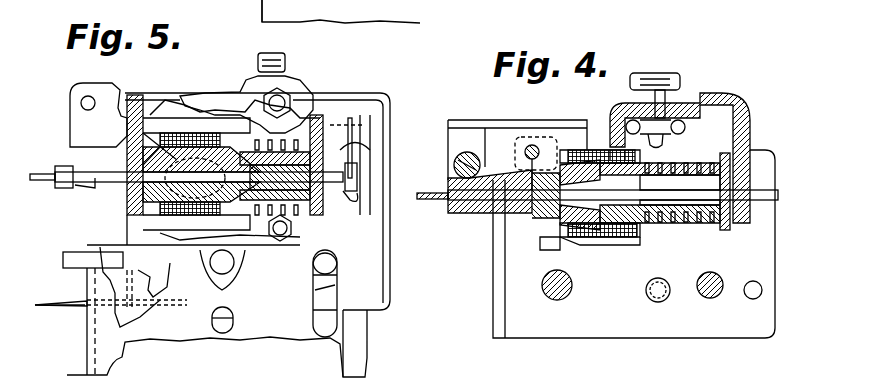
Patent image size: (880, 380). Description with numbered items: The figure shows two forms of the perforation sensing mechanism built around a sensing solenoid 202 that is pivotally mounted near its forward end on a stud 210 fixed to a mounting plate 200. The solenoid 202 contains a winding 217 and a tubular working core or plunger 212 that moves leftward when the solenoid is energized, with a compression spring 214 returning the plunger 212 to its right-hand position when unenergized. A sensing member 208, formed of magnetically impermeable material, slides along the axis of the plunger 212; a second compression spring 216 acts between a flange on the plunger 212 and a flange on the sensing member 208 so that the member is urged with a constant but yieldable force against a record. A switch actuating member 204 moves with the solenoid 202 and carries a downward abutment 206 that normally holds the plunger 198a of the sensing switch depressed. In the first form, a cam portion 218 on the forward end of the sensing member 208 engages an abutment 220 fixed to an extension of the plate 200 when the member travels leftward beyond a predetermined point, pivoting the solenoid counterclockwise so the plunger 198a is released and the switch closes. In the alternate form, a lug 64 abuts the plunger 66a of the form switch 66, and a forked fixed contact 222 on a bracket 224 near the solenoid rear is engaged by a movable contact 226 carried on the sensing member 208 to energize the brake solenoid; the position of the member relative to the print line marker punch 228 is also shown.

In FIG. 5, the lug 64 is at (68, 258).
In FIG. 5, the form switch 66 is at (73, 213).
In FIG. 5, the switch plunger 66a is at (110, 258).
In FIG. 4, the plunger 198a is at (690, 107).
In FIG. 4, the plate 200 is at (760, 267).
In FIG. 5, the sensing solenoid 202 is at (165, 128).
In FIG. 4, the sensing solenoid 202 is at (632, 248).
In FIG. 4, the switch actuating member 204 is at (742, 112).
In FIG. 4, the abutment 206 is at (657, 92).
In FIG. 5, the sensing member 208 is at (62, 170).
In FIG. 4, the sensing member 208 is at (757, 183).
In FIG. 4, the stud 210 is at (595, 143).
In FIG. 5, the plunger 212 is at (218, 110).
In FIG. 4, the plunger 212 is at (650, 220).
In FIG. 5, the compression spring 214 is at (305, 133).
In FIG. 4, the compression spring 214 is at (680, 163).
In FIG. 5, the second compression spring 216 is at (253, 247).
In FIG. 4, the second compression spring 216 is at (690, 223).
In FIG. 5, the winding 217 is at (168, 135).
In FIG. 4, the winding 217 is at (575, 150).
In FIG. 4, the cam portion 218 is at (470, 215).
In FIG. 4, the abutment 220 is at (456, 158).
In FIG. 5, the fixed contact 222 is at (343, 147).
In FIG. 5, the bracket 224 is at (323, 125).
In FIG. 5, the movable contact 226 is at (372, 165).
In FIG. 5, the punch 228 is at (72, 308).